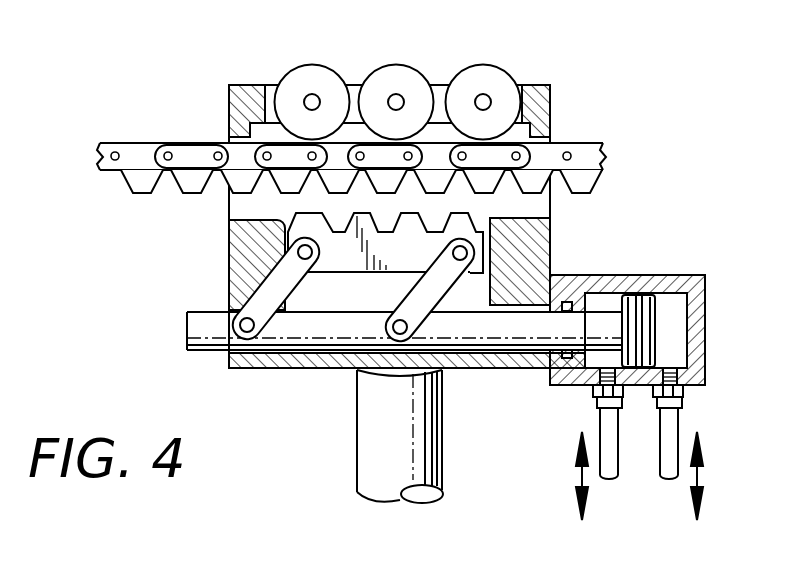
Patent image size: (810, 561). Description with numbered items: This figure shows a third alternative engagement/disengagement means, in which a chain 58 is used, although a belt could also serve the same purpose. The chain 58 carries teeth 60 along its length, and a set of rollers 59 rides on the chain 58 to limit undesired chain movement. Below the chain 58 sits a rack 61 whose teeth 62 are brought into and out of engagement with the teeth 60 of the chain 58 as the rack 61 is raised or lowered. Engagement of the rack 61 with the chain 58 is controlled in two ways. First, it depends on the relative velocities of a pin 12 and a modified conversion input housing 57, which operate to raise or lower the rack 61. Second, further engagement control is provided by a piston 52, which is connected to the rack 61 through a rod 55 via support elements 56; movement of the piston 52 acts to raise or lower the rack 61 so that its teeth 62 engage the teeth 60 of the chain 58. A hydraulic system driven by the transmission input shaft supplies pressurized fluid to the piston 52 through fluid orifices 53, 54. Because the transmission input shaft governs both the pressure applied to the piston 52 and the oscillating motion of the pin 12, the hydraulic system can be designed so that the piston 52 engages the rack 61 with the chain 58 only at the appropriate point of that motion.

The pin 12 is at (357, 447).
The piston 52 is at (657, 328).
The fluid orifice 53 is at (598, 422).
The fluid orifice 54 is at (680, 420).
The rod 55 is at (214, 338).
The support elements 56 is at (324, 311).
The modified conversion input housing 57 is at (229, 295).
The chain 58 is at (353, 157).
The rollers 59 is at (484, 80).
The teeth of chain 60 is at (178, 177).
The rack 61 is at (343, 253).
The teeth of rack 62 is at (345, 223).